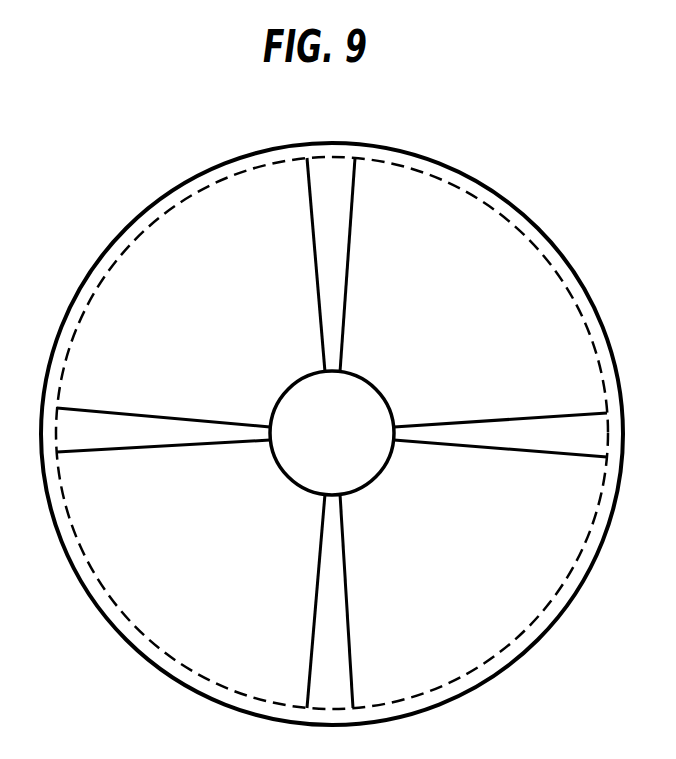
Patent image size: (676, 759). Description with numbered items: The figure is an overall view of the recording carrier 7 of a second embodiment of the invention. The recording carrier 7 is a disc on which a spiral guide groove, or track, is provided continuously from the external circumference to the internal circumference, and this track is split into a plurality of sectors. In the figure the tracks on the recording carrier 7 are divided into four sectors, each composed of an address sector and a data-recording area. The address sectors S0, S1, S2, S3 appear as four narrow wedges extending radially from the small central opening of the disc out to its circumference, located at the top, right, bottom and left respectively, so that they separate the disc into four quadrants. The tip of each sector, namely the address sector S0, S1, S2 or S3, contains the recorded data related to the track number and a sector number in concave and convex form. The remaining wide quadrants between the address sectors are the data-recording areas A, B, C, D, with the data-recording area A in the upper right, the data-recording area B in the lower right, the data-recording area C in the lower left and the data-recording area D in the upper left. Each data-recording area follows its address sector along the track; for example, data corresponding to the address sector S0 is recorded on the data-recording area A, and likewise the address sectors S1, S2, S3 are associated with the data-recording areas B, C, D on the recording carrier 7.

The recording carrier 7 is at (545, 233).
The address sector S0 is at (331, 265).
The address sector S1 is at (500, 435).
The address sector S2 is at (330, 601).
The address sector S3 is at (163, 430).
The data-recording area A is at (457, 307).
The data-recording area B is at (458, 553).
The data-recording area C is at (205, 553).
The data-recording area D is at (205, 305).